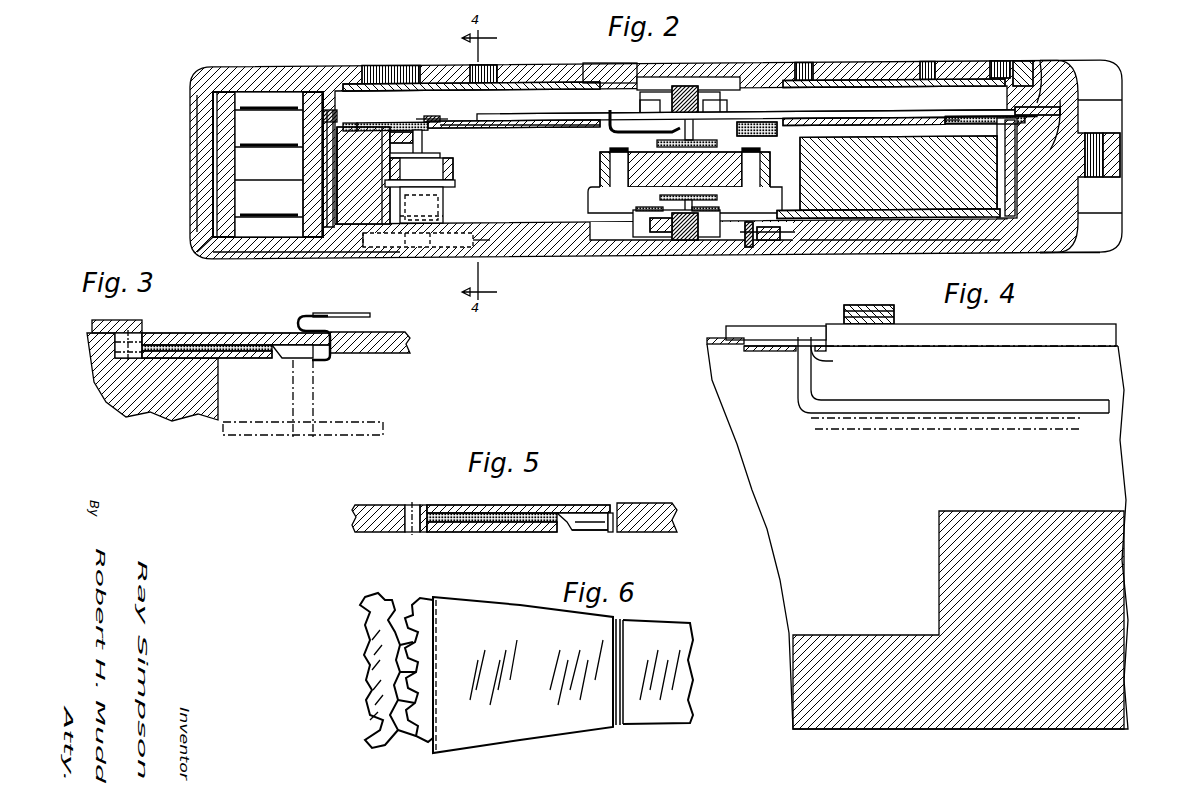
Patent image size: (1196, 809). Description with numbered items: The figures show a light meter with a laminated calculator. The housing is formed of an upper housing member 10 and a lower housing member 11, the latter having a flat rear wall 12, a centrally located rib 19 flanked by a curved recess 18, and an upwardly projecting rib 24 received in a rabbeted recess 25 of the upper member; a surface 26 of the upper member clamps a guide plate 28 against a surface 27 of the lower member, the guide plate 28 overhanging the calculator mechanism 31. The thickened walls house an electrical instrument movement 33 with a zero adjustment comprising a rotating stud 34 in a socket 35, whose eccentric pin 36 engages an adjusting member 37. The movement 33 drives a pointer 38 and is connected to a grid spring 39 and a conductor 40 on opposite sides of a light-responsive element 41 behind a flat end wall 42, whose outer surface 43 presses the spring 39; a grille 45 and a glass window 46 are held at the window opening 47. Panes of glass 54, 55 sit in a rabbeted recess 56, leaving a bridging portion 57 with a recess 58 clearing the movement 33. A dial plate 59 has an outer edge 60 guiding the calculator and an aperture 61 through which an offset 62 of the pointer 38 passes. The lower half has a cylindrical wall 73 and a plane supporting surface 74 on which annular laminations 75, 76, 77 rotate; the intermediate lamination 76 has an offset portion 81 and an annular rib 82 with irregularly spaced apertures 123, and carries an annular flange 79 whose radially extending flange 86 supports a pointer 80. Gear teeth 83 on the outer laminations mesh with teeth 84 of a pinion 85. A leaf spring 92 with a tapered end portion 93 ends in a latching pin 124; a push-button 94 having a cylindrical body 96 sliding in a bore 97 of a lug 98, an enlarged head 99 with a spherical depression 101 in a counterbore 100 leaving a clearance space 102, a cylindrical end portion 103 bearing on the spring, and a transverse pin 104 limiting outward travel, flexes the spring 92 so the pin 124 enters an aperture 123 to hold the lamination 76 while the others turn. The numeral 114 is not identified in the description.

In FIG. 2, the upper housing member 10 is at (1060, 66).
In FIG. 2, the lower housing member 11 is at (1065, 250).
In FIG. 2, the flat rear wall 12 is at (860, 242).
In FIG. 2, the partially cylindrical curved recess 18 is at (1080, 213).
In FIG. 2, the centrally located rib 19 is at (1120, 155).
In FIG. 2, the upwardly projecting rib 24 is at (1080, 100).
In FIG. 2, the rabbeted recess 25 is at (1057, 140).
In FIG. 2, the surface of upper housing member 26 is at (1050, 116).
In FIG. 2, the surface on lower housing member 27 is at (1043, 80).
In FIG. 2, the guide plate 28 is at (348, 123).
In FIG. 3, the guide plate 28 is at (112, 320).
In FIG. 2, the calculator mechanism 31 is at (968, 114).
In FIG. 2, the electrical instrument movement 33 is at (722, 160).
In FIG. 2, the rotating stud 34 is at (765, 242).
In FIG. 2, the socket 35 is at (748, 250).
In FIG. 2, the eccentric pin 36 is at (715, 242).
In FIG. 2, the adjusting member 37 is at (645, 232).
In FIG. 2, the pointer 38 is at (515, 113).
In FIG. 2, the connector or grid spring 39 is at (312, 92).
In FIG. 2, the conductor 40 is at (325, 94).
In FIG. 2, the light-responsive element 41 is at (330, 94).
In FIG. 2, the flat end wall 42 is at (351, 175).
In FIG. 2, the outer surface of end wall 43 is at (363, 175).
In FIG. 2, the grille 45 is at (258, 108).
In FIG. 2, the glass window 46 is at (225, 92).
In FIG. 2, the window opening 47 is at (213, 232).
In FIG. 2, the pane of glass 54 is at (545, 84).
In FIG. 2, the pane of glass 55 is at (855, 82).
In FIG. 2, the rabbeted recess 56 is at (380, 66).
In FIG. 2, the bridging portion 57 is at (608, 70).
In FIG. 2, the centrally located recess 58 is at (680, 88).
In FIG. 2, the dial plate 59 is at (486, 114).
In FIG. 5, the dial plate 59 is at (655, 532).
In FIG. 2, the outer edge of dial plate 60 is at (932, 113).
In FIG. 2, the circular aperture 61 is at (765, 122).
In FIG. 2, the offset 62 is at (622, 106).
In FIG. 2, the cylindrical wall 73 is at (325, 116).
In FIG. 2, the plane supporting surface 74 is at (370, 175).
In FIG. 2, the uppermost annular lamination 75 is at (375, 123).
In FIG. 3, the uppermost annular lamination 75 is at (195, 337).
In FIG. 5, the uppermost annular lamination 75 is at (510, 506).
In FIG. 2, the intermediate lamination 76 is at (400, 123).
In FIG. 3, the intermediate lamination 76 is at (218, 342).
In FIG. 5, the intermediate lamination 76 is at (435, 532).
In FIG. 2, the third lamination 77 is at (400, 138).
In FIG. 3, the third lamination 77 is at (165, 348).
In FIG. 5, the third lamination 77 is at (490, 532).
In FIG. 2, the annular flange 79 is at (455, 122).
In FIG. 3, the annular flange 79 is at (375, 332).
In FIG. 4, the annular flange 79 is at (1052, 326).
In FIG. 5, the annular flange 79 is at (640, 503).
In FIG. 6, the annular flange 79 is at (620, 670).
In FIG. 2, the pointer 80 is at (432, 117).
In FIG. 3, the pointer 80 is at (128, 333).
In FIG. 4, the pointer 80 is at (866, 306).
In FIG. 5, the pointer 80 is at (412, 510).
In FIG. 6, the pointer 80 is at (425, 696).
In FIG. 5, the offset portion 81 is at (558, 528).
In FIG. 5, the annular rib 82 is at (603, 533).
In FIG. 6, the gear teeth 83 is at (420, 600).
In FIG. 6, the complementary teeth 84 is at (375, 600).
In FIG. 6, the pinion 85 is at (380, 706).
In FIG. 3, the radially extending flange 86 is at (312, 316).
In FIG. 3, the leaf spring 92 is at (355, 425).
In FIG. 4, the leaf spring 92 is at (1037, 400).
In FIG. 2, the tapered end portion 93 is at (440, 155).
In FIG. 2, the push-button 94 is at (452, 248).
In FIG. 2, the cylindrical body 96 is at (443, 216).
In FIG. 2, the cylindrical bore 97 is at (440, 208).
In FIG. 2, the lug 98 is at (445, 200).
In FIG. 2, the enlarged head 99 is at (430, 250).
In FIG. 2, the counterbore 100 is at (490, 252).
In FIG. 2, the partially spherical depression 101 is at (405, 250).
In FIG. 2, the clearance space 102 is at (368, 250).
In FIG. 2, the cylindrical end portion 103 is at (453, 168).
In FIG. 2, the transverse pin 104 is at (455, 182).
In FIG. 2, the bottom wall 114 is at (290, 254).
In FIG. 3, the circular apertures 123 is at (285, 356).
In FIG. 4, the circular apertures 123 is at (828, 360).
In FIG. 5, the circular apertures 123 is at (575, 533).
In FIG. 2, the latching pin 124 is at (422, 140).
In FIG. 3, the latching pin 124 is at (318, 380).
In FIG. 4, the latching pin 124 is at (798, 380).